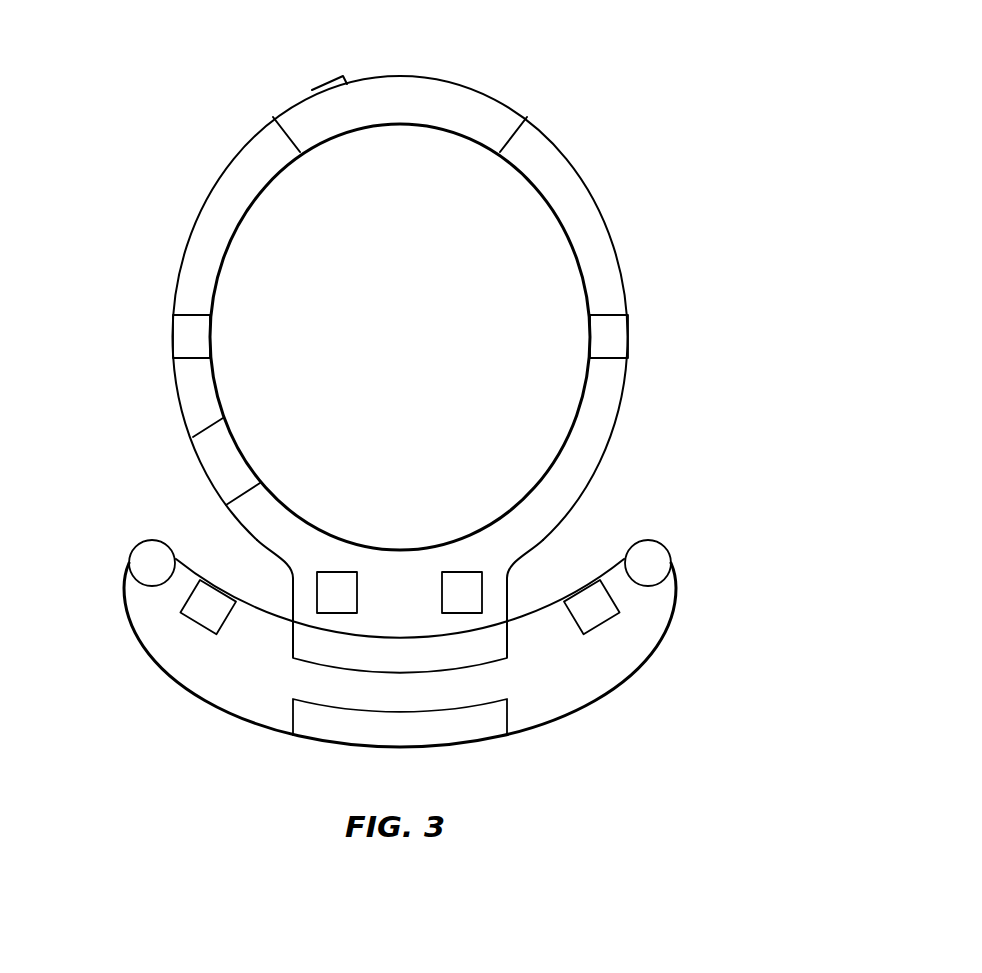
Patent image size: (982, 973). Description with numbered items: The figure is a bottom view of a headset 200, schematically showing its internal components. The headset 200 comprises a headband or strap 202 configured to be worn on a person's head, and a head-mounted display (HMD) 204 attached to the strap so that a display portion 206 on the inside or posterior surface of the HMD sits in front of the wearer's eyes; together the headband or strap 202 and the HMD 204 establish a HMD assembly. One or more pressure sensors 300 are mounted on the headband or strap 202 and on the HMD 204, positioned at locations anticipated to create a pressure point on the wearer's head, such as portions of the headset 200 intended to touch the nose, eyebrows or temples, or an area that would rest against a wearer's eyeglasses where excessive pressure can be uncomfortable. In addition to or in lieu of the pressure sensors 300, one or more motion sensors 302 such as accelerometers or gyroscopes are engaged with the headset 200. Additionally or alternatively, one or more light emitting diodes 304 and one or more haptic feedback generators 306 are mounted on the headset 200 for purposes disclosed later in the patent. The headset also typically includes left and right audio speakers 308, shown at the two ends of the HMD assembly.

The headset 200 is at (643, 189).
The headband or strap 202 is at (210, 210).
The head-mounted display (HMD) 204 is at (628, 686).
The display portion 206 is at (601, 562).
The pressure sensors 300 is at (172, 338).
The motion sensors 302 is at (205, 467).
The light emitting diodes (LED) 304 is at (310, 652).
The haptic feedback generators 306 is at (473, 733).
The audio speakers 308 is at (128, 563).